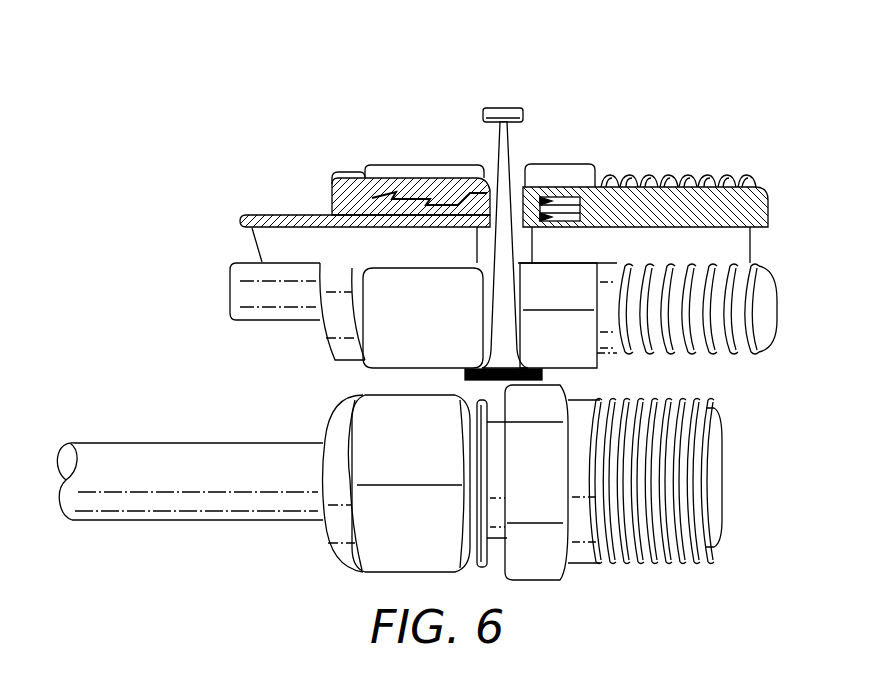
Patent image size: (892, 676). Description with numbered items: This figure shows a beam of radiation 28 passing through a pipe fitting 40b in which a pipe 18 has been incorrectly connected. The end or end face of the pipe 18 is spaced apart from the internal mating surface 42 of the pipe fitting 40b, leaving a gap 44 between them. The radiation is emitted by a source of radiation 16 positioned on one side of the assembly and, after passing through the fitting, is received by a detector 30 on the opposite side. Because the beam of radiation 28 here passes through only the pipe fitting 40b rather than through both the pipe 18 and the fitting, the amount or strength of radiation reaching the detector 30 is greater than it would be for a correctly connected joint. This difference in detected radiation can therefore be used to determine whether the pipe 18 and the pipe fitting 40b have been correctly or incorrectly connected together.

The source of radiation 16 is at (500, 108).
The beam of radiation 28 is at (498, 160).
The detector 30 is at (467, 375).
The gap 44 is at (483, 228).
The internal mating surface 42 is at (543, 230).
The pipe fitting 40b is at (750, 242).
The pipe 18 is at (238, 290).